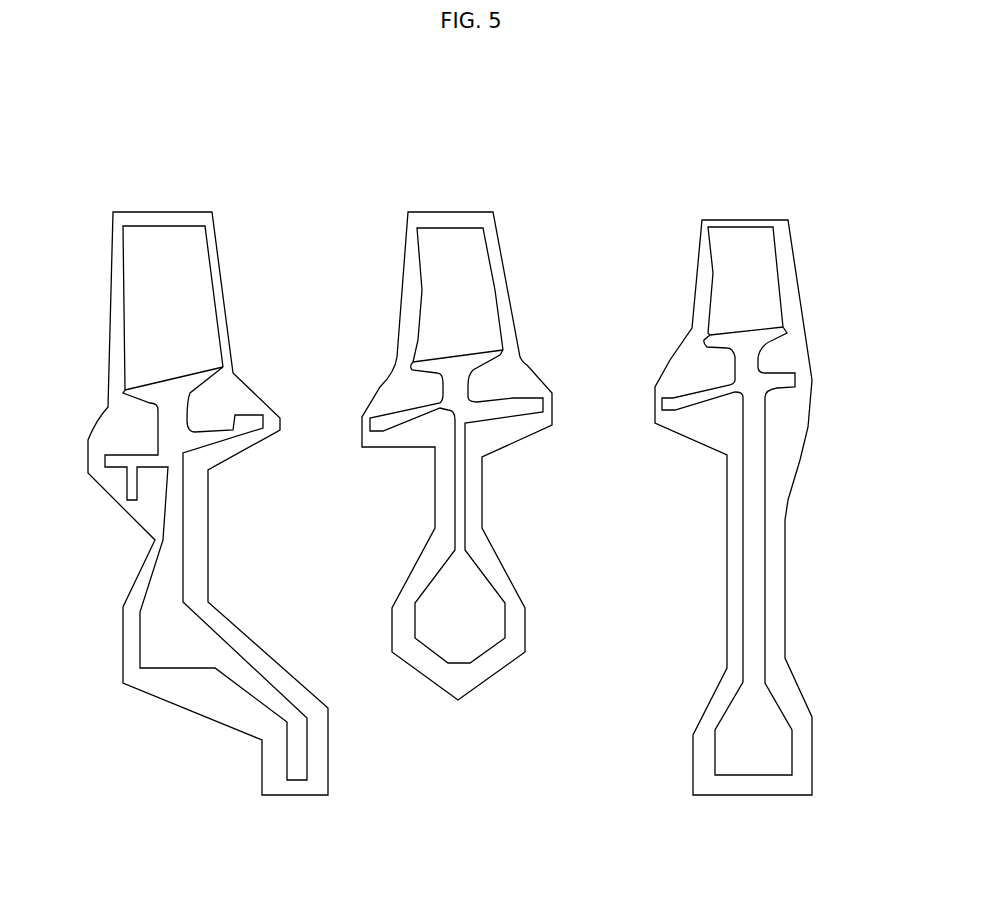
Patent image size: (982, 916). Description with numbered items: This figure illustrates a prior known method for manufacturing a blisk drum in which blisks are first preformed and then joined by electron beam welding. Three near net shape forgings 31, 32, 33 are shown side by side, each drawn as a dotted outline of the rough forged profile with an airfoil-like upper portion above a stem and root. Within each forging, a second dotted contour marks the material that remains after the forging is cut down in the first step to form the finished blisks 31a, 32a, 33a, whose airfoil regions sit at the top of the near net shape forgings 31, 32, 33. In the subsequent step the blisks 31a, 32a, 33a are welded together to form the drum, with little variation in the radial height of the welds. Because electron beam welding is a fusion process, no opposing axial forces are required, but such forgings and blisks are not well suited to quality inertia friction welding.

The near net shape forging 31 is at (125, 513).
The blisk 31a is at (182, 248).
The near net shape forging 32 is at (418, 443).
The blisk 32a is at (455, 240).
The near net shape forging 33 is at (693, 433).
The blisk 33a is at (727, 240).